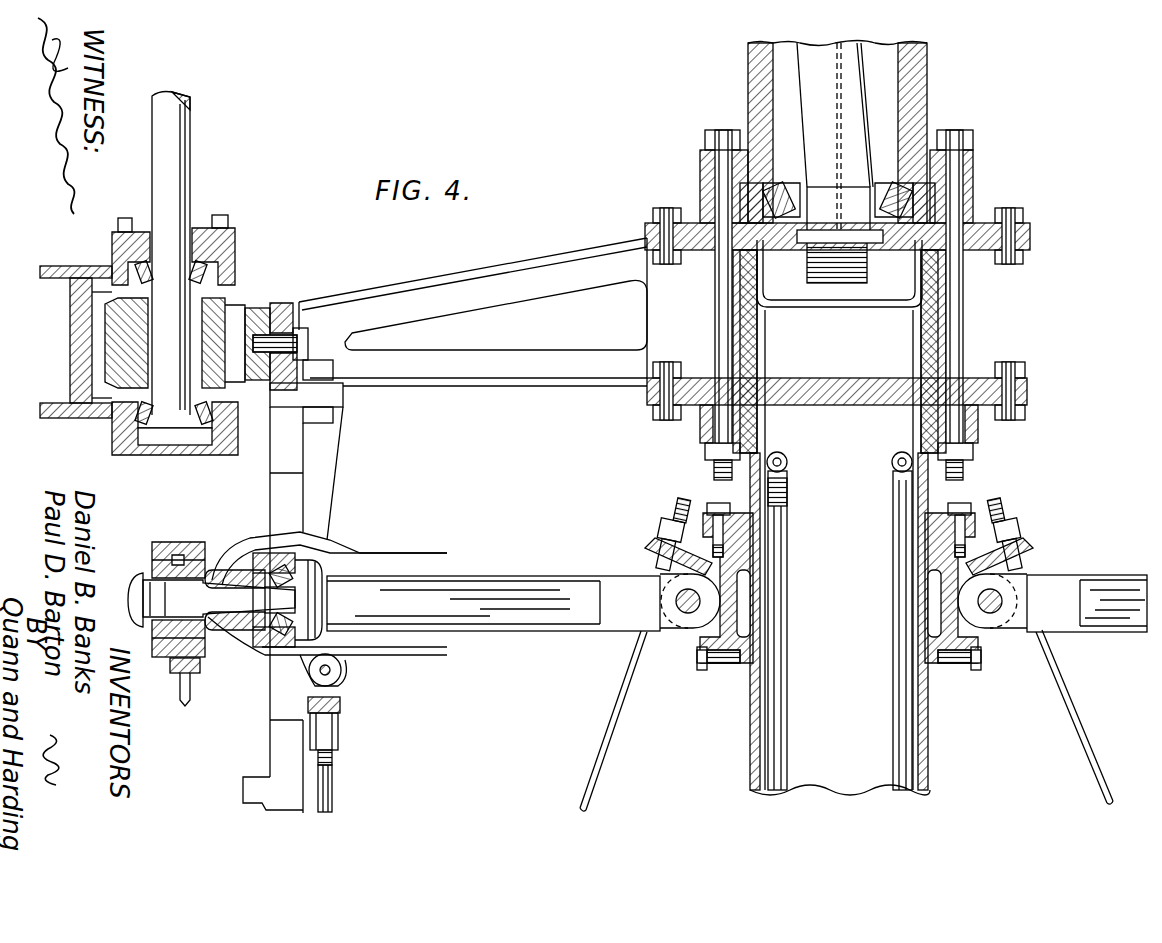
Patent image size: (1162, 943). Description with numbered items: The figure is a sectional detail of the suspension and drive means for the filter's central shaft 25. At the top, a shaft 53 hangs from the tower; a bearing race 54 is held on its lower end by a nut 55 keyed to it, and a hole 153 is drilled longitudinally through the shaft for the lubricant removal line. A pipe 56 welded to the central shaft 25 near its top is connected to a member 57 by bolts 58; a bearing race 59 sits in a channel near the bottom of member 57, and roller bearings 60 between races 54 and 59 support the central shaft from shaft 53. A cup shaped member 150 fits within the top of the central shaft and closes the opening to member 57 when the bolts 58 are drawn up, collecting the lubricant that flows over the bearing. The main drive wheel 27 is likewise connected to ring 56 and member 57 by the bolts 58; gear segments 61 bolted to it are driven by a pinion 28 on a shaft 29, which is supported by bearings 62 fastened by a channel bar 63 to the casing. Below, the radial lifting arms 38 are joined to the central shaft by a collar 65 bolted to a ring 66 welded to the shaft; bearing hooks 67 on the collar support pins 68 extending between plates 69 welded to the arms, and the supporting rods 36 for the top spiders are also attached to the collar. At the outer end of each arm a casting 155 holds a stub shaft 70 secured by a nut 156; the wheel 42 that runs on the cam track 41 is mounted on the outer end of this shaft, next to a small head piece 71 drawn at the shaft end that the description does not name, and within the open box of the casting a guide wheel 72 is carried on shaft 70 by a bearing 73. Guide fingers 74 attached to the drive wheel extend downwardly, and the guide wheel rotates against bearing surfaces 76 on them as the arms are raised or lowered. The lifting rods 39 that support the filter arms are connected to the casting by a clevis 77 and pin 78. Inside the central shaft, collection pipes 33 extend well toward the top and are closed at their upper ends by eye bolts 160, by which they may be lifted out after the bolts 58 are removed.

The central shaft 25 is at (752, 736).
The main drive wheel 27 is at (290, 308).
The pinion 28 is at (112, 338).
The shaft 29 is at (178, 163).
The collection pipes 33 is at (898, 608).
The supporting rods 36 is at (593, 746).
The radial lifting arms 38 is at (498, 574).
The lifting rods 39 is at (335, 779).
The cam track 41 is at (180, 689).
The wheel 42 is at (178, 542).
The shaft 53 is at (812, 110).
The bearing race 54 is at (870, 185).
The nut 55 is at (858, 270).
The pipe 56 is at (980, 437).
The member 57 is at (921, 97).
The bolts 58 is at (718, 193).
The bearing race 59 is at (912, 195).
The roller bearings 60 is at (945, 262).
The gear segments 61 is at (257, 303).
The bearings 62 is at (222, 238).
The channel bar 63 is at (70, 268).
The collar 65 is at (975, 681).
The ring 66 is at (722, 673).
The bearing hooks 67 is at (690, 628).
The pins 68 is at (676, 592).
The plates 69 is at (606, 612).
The stub shaft 70 is at (226, 580).
The bolt head 71 is at (147, 574).
The guide wheel 72 is at (268, 642).
The bearing 73 is at (322, 588).
The guide fingers 74 is at (330, 490).
The bearing surfaces 76 is at (278, 500).
The clevis 77 is at (342, 710).
The pin 78 is at (332, 671).
The cup shaped member 150 is at (812, 308).
The hole 153 is at (835, 97).
The casting 155 is at (328, 553).
The nut 156 is at (262, 615).
The eye bolts 160 is at (895, 456).